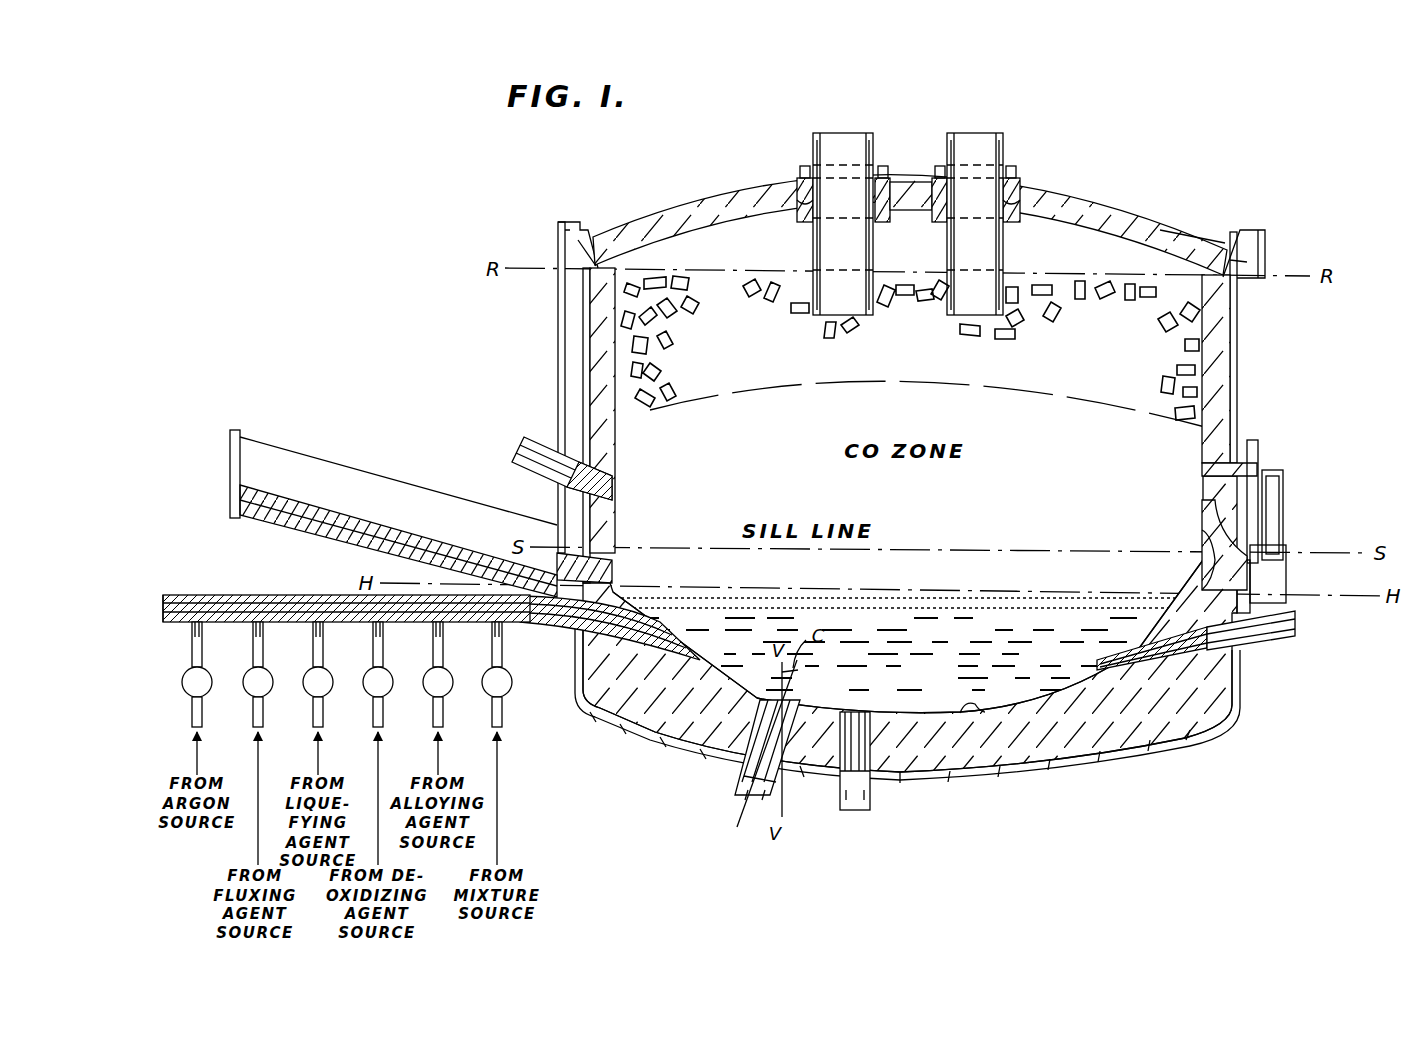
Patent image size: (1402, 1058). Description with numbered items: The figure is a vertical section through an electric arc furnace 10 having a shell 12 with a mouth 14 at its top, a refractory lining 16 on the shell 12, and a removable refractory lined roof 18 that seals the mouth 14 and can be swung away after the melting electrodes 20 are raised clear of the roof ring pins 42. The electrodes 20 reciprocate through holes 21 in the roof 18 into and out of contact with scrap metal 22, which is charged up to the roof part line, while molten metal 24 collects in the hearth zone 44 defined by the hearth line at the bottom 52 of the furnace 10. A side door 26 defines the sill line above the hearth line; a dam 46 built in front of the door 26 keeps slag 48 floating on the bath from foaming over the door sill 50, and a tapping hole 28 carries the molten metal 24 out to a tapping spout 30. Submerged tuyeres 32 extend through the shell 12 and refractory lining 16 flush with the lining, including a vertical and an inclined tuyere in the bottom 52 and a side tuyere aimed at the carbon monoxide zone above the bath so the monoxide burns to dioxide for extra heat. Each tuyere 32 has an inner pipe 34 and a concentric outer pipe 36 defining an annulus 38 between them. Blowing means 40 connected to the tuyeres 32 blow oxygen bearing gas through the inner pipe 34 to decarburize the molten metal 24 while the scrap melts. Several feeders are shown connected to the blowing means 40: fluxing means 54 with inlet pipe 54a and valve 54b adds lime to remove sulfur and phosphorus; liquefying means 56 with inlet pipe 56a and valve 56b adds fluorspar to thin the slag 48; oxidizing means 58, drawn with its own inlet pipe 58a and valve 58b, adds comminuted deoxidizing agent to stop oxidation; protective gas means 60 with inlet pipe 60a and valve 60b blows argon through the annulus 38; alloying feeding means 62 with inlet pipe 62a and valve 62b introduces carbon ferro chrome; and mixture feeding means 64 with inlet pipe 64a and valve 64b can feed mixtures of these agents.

The electric arc furnace 10 is at (1168, 222).
The shell 12 is at (1240, 338).
The mouth 14 is at (1236, 246).
The refractory lining 16 is at (1218, 388).
The roof 18 is at (1110, 216).
The melting electrodes 20 is at (850, 145).
The holes 21 is at (803, 198).
The scrap metal 22 is at (688, 323).
The molten metal 24 is at (778, 625).
The side door 26 is at (1288, 528).
The tapping hole 28 is at (614, 575).
The tapping spout 30 is at (366, 505).
The submerged tuyeres 32 is at (1275, 678).
The inner pipe 34 is at (200, 598).
The outer pipe 36 is at (228, 598).
The annulus 38 is at (165, 602).
The blowing means 40 is at (162, 701).
The roof ring pins 42 is at (582, 225).
The hearth zone 44 is at (910, 639).
The dam 46 is at (1207, 548).
The slag 48 is at (1042, 606).
The door sill 50 is at (1240, 535).
The bottom 52 is at (970, 708).
The fluxing means 54 is at (243, 685).
The inlet pipe 54a is at (263, 632).
The valve 54b is at (263, 726).
The liquefying means 56 is at (303, 685).
The inlet pipe 56a is at (323, 632).
The valve 56b is at (323, 726).
The oxidizing means 58 is at (363, 685).
The deoxidizing agent inlet pipe 58a is at (383, 632).
The deoxidizing agent supply pipe 58b is at (383, 726).
The protective gas means 60 is at (181, 682).
The inlet pipe 60a is at (202, 632).
The valve 60b is at (202, 726).
The alloying feeding means 62 is at (423, 685).
The inlet pipe 62a is at (443, 632).
The valve 62b is at (443, 726).
The mixture feeding means 64 is at (482, 685).
The inlet pipe 64a is at (502, 650).
The valve 64b is at (502, 726).